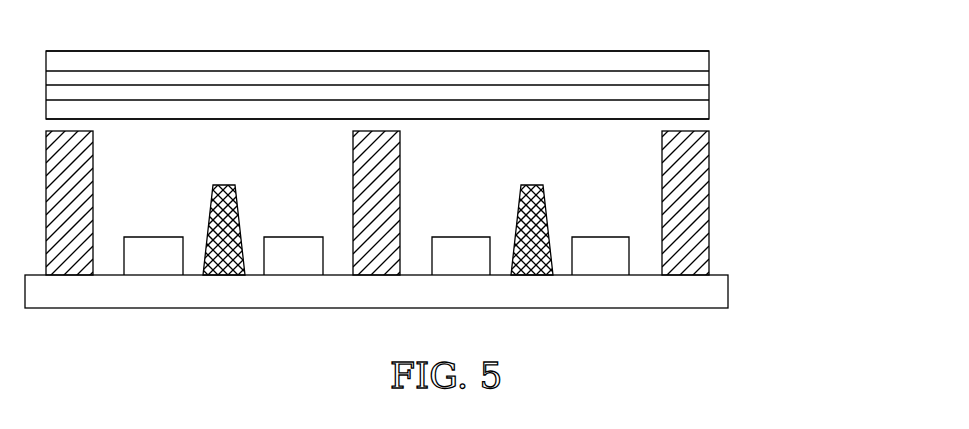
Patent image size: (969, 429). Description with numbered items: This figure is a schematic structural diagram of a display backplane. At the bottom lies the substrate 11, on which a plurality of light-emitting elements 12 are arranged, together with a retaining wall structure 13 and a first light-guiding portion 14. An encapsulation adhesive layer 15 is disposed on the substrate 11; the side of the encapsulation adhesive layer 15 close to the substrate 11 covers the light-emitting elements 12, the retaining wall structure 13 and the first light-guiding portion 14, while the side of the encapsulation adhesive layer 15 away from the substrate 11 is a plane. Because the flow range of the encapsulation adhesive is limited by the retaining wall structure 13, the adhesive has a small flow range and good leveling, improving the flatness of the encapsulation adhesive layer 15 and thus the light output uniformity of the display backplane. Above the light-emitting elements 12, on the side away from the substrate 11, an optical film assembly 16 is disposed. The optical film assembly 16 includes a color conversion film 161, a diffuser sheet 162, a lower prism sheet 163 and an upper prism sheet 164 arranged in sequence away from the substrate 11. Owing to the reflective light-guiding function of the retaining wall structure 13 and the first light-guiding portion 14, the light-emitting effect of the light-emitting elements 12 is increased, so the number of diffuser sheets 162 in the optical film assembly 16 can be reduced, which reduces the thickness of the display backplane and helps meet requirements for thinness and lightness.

The substrate 11 is at (728, 290).
The light-emitting elements 12 is at (602, 255).
The retaining wall structure 13 is at (690, 180).
The first light-guiding portion 14 is at (532, 215).
The encapsulation adhesive layer 15 is at (429, 143).
The optical film assembly 16 is at (460, 77).
The color conversion film 161 is at (709, 110).
The diffuser sheet 162 is at (709, 88).
The lower prism sheet 163 is at (709, 73).
The upper prism sheet 164 is at (709, 52).